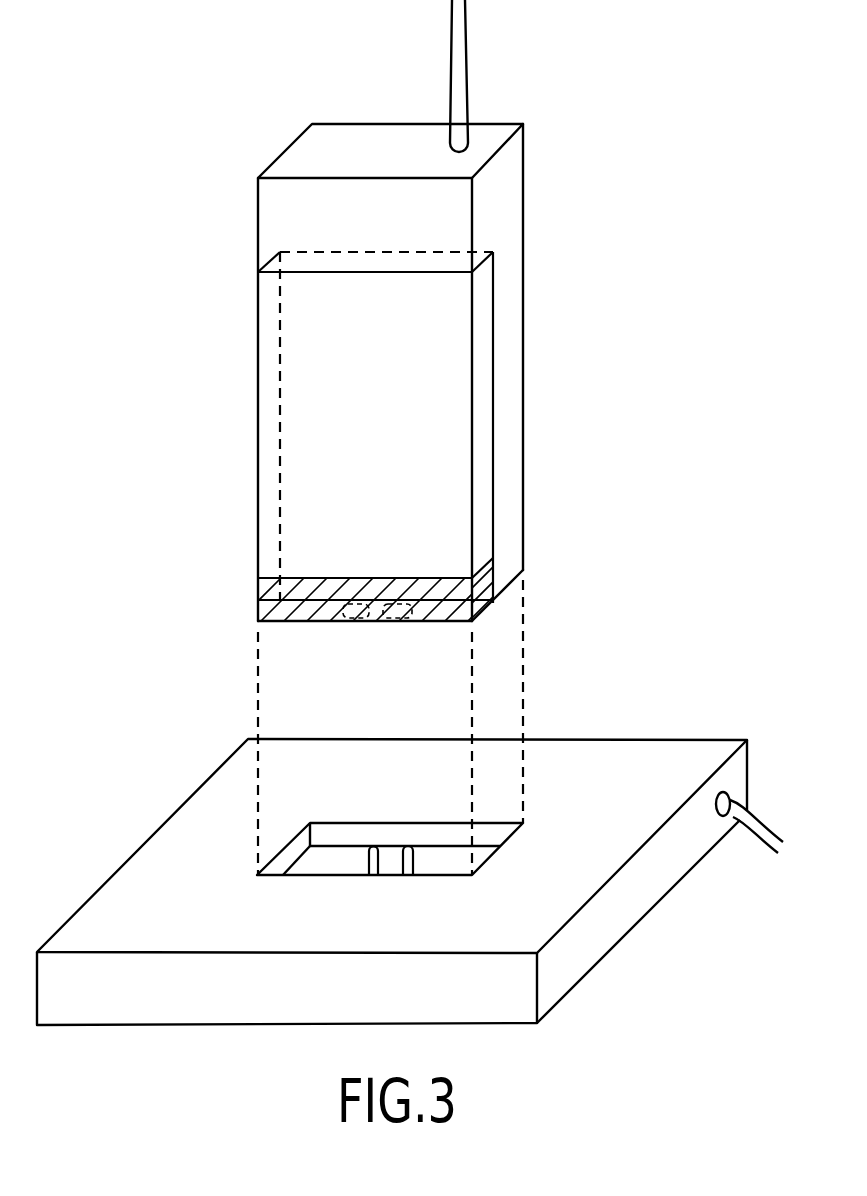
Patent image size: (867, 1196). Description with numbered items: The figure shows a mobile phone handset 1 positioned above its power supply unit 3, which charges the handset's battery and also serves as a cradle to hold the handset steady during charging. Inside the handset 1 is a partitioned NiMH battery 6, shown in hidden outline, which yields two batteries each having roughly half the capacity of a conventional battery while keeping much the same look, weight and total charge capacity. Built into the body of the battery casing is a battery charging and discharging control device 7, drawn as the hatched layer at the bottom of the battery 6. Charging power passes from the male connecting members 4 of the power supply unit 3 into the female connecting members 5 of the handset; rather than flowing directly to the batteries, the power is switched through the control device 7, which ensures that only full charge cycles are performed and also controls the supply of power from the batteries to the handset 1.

The mobile phone handset 1 is at (517, 193).
The power supply unit 3 is at (613, 750).
The male connecting members 4 is at (407, 877).
The female connecting members 5 is at (383, 624).
The partitioned NiMH battery 6 is at (295, 413).
The battery charging and discharging control device 7 is at (262, 593).